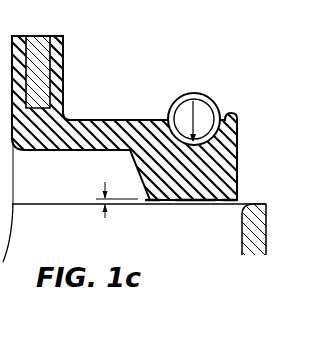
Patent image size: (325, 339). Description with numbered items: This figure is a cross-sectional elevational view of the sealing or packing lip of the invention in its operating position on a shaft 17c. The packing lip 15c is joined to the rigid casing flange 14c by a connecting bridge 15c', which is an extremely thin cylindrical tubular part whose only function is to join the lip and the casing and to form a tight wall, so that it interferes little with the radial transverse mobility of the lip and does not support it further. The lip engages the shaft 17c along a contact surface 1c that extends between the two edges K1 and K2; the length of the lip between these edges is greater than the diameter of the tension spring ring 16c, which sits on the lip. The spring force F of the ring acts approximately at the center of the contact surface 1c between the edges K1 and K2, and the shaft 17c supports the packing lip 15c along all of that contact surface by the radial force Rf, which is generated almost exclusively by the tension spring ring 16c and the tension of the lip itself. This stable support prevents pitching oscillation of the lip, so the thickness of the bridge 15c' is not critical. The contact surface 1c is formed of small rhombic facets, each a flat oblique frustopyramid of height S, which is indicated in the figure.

The contact surface 1c is at (170, 206).
The rigid casing flange 14c is at (65, 56).
The packing lip 15c is at (119, 100).
The connecting bridge 15c' is at (82, 102).
The tension spring ring 16c is at (210, 97).
The shaft 17c is at (47, 204).
The spring force F is at (197, 121).
The height S is at (110, 199).
The edge K1 is at (227, 206).
The edge K2 is at (150, 206).
The radial force Rf is at (195, 207).